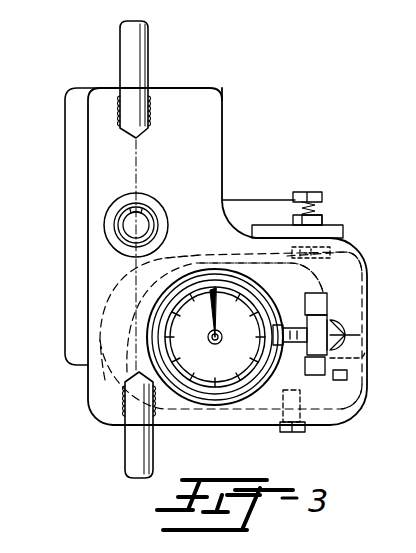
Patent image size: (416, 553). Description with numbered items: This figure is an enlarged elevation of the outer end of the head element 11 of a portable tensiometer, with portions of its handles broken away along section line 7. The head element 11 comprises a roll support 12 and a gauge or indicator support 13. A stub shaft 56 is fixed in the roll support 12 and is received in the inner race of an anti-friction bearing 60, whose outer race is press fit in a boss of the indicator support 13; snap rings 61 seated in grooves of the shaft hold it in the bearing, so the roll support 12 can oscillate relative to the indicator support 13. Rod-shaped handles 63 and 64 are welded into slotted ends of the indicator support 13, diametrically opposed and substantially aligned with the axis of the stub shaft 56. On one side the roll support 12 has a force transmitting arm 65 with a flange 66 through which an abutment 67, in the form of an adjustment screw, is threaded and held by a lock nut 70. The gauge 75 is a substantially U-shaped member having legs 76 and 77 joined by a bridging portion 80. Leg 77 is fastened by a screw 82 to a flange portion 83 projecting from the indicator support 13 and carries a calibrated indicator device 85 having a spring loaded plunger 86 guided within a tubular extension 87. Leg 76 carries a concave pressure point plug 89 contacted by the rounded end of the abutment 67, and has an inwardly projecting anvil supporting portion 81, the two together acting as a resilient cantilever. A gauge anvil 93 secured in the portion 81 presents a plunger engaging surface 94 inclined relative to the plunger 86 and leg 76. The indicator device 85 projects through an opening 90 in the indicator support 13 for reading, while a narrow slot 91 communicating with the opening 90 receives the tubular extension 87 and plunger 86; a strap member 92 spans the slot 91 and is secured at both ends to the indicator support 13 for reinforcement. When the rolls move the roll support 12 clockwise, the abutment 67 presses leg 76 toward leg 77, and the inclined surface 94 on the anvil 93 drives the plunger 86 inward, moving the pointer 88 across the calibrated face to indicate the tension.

The section line 7- 7 is at (136, 138).
The head element 11 is at (226, 92).
The roll support 12 is at (65, 138).
The indicator support 13 is at (213, 157).
The stub shaft 56 is at (147, 220).
The anti-friction bearing 60 is at (167, 225).
The snap rings 61 is at (150, 211).
The handle 63 is at (150, 40).
The handle 64 is at (154, 449).
The force transmitting arm 65 is at (266, 200).
The flange 66 is at (338, 226).
The abutment 67 is at (311, 192).
The lock nut 70 is at (318, 222).
The gauge 75 is at (109, 378).
The leg 76 is at (257, 258).
The leg 77 is at (359, 401).
The bridging portion 80 is at (103, 312).
The anvil supporting portion 81 is at (362, 346).
The screw 82 is at (283, 433).
The flange portion 83 is at (318, 426).
The indicator device 85 is at (306, 304).
The spring loaded plunger 86 is at (341, 380).
The tubular extension 87 is at (299, 352).
The pointer 88 is at (219, 311).
The pressure point plug 89 is at (352, 254).
The opening 90 is at (207, 260).
The slot 91 is at (367, 309).
The strap member 92 is at (327, 306).
The gauge anvil 93 is at (361, 332).
The plunger engaging surface 94 is at (366, 360).